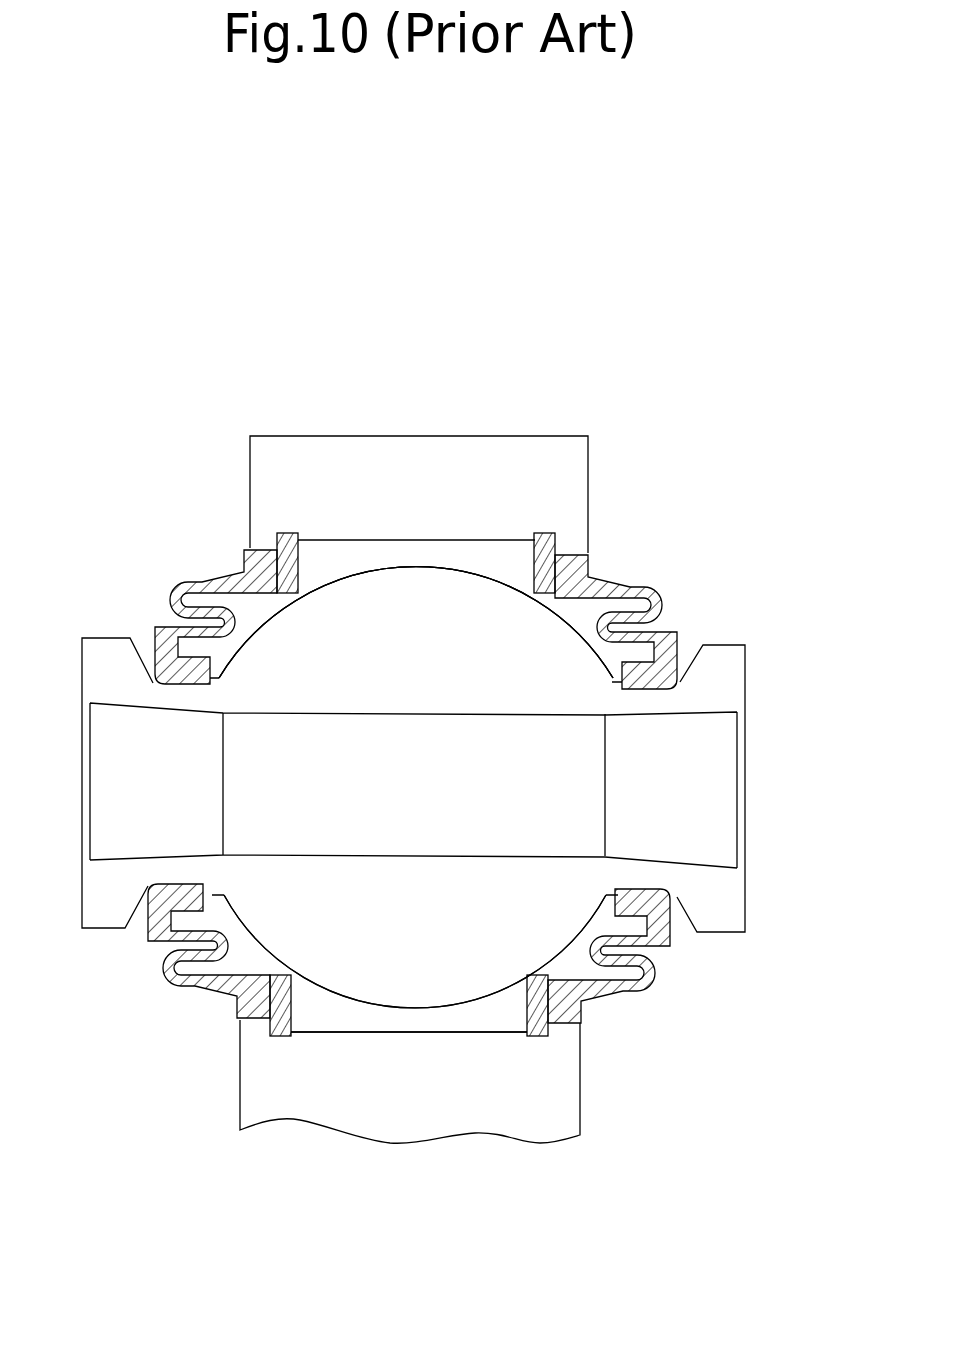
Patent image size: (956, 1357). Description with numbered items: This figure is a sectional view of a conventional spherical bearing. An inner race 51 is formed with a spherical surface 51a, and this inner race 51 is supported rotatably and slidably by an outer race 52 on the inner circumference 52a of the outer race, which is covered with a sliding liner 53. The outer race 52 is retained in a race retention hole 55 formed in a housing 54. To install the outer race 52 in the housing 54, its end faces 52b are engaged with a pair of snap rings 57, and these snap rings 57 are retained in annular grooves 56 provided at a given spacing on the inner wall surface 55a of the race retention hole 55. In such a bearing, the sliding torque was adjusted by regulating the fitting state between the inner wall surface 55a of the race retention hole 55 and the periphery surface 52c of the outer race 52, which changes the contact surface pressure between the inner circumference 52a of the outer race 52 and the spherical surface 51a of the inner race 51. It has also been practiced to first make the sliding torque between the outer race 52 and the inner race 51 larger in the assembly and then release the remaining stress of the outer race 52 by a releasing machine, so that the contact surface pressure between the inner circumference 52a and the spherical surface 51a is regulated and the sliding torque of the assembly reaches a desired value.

The inner race 51 is at (727, 662).
The spherical surface 51a is at (468, 1010).
The outer race 52 is at (493, 536).
The inner circumference 52a is at (495, 598).
The end faces 52b is at (280, 980).
The periphery surface 52c is at (390, 1033).
The sliding liner 53 is at (424, 572).
The housing 54 is at (367, 437).
The race retention hole 55 is at (325, 556).
The inner wall surface 55a is at (385, 545).
The annular grooves 56 is at (270, 548).
The snap rings 57 is at (288, 1040).